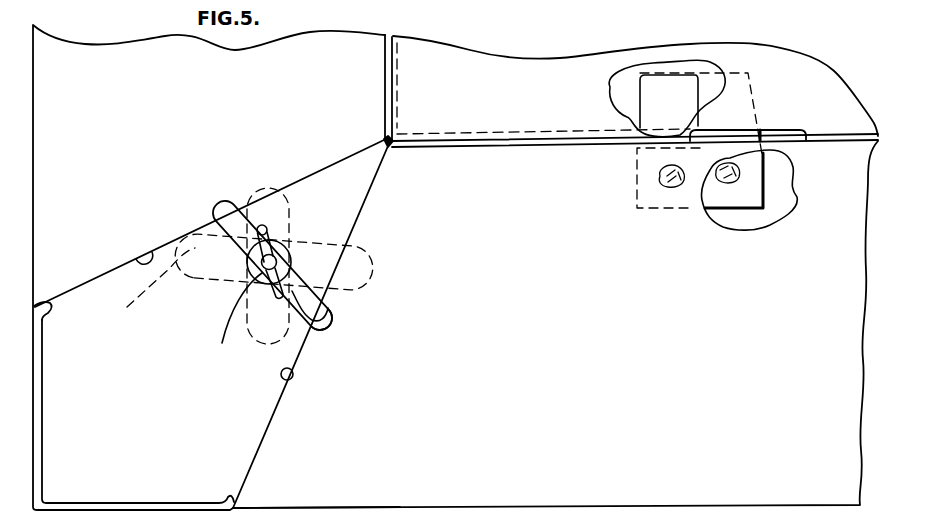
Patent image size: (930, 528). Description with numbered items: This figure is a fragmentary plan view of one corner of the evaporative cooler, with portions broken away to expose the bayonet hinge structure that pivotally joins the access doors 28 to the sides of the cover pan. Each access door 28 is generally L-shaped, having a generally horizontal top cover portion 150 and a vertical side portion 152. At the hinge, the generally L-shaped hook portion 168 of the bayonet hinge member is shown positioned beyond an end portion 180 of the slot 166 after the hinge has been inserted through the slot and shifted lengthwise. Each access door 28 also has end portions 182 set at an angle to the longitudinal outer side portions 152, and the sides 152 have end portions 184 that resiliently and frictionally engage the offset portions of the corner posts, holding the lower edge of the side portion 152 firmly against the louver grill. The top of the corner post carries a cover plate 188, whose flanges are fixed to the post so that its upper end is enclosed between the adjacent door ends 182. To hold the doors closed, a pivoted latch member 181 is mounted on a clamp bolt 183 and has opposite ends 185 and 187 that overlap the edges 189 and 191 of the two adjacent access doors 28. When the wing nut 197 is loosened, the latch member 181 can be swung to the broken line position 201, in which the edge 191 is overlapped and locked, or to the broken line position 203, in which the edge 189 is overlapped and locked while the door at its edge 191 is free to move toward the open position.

The access door 28 is at (291, 111).
The top cover portion 150 is at (611, 346).
The side portion 152 is at (600, 502).
The slot 166 is at (782, 127).
The hook portion 168 is at (667, 125).
The end portion of slot 180 is at (703, 128).
The latch member 181 is at (278, 232).
The end portion of access door 182 is at (303, 173).
The clamp bolt 183 is at (231, 323).
The end portion of side portion 184 is at (242, 498).
The latch member end 185 is at (223, 199).
The latch member end 187 is at (328, 325).
The cover plate 188 is at (215, 314).
The edge of access door 189 is at (136, 257).
The edge of access door 191 is at (293, 378).
The wing nut 197 is at (330, 307).
The broken line position 201 is at (146, 284).
The broken line position 203 is at (281, 186).